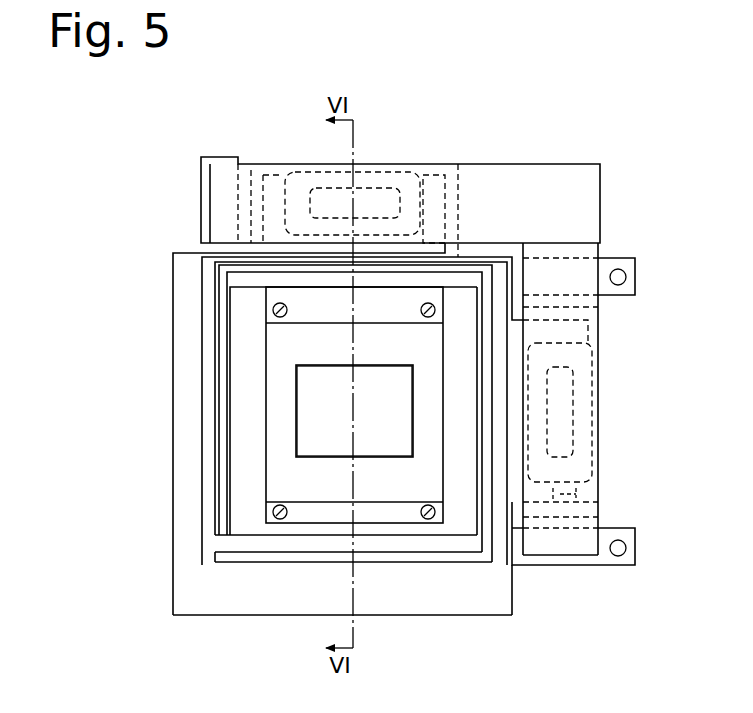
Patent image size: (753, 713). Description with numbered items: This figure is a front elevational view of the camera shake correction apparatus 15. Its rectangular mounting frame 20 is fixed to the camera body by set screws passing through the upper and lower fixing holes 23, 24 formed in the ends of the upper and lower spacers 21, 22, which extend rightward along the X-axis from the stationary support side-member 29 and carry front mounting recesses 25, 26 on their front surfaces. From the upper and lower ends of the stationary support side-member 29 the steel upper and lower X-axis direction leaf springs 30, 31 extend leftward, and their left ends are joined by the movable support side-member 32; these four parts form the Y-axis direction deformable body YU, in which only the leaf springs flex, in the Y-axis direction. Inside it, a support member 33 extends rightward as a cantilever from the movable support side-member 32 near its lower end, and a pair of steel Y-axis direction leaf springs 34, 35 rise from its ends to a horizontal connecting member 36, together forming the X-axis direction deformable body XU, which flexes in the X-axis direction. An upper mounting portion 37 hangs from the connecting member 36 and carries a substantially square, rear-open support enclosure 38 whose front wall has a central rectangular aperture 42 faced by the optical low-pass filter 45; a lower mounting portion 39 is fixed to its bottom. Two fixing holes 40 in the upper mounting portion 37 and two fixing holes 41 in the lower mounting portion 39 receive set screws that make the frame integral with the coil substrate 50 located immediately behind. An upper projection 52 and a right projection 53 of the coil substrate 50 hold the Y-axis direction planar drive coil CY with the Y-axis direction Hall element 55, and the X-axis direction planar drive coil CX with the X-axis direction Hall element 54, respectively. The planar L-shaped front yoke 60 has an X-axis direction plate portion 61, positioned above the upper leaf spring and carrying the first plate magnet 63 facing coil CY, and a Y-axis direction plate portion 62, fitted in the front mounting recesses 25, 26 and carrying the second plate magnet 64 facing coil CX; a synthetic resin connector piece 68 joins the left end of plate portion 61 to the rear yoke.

The camera shake correction apparatus 15 is at (146, 223).
The rectangular mounting frame 20 is at (190, 457).
The upper spacer 21 is at (636, 261).
The lower spacer 22 is at (636, 546).
The upper fixing hole 23 is at (612, 283).
The lower fixing hole 24 is at (612, 554).
The front mounting recess 25 is at (560, 265).
The front mounting recess 26 is at (547, 554).
The stationary support side-member 29 is at (498, 392).
The upper X-axis direction leaf spring 30 is at (420, 255).
The lower X-axis direction leaf spring 31 is at (407, 565).
The movable support side-member 32 is at (205, 433).
The support member 33 is at (381, 543).
The Y-axis direction leaf spring 34 is at (466, 509).
The Y-axis direction leaf spring 35 is at (228, 486).
The connecting member 36 is at (380, 283).
The upper mounting portion 37 is at (277, 297).
The support enclosure 38 is at (278, 403).
The lower mounting portion 39 is at (298, 508).
The fixing holes 40 is at (272, 312).
The fixing holes 41 is at (282, 520).
The rectangular aperture 42 is at (306, 365).
The optical low-pass filter 45 is at (309, 389).
The coil substrate 50 is at (492, 602).
The upper projection 52 is at (270, 178).
The right projection 53 is at (570, 488).
The X-axis direction Hall element 54 is at (565, 500).
The Y-axis direction Hall element 55 is at (453, 255).
The front yoke 60 is at (545, 203).
The X-axis direction plate portion 61 is at (500, 200).
The Y-axis direction plate portion 62 is at (598, 462).
The first plate magnet 63 is at (238, 182).
The second plate magnet 64 is at (600, 322).
The connector piece 68 is at (233, 175).
The X-axis direction planar drive coil CX is at (582, 358).
The Y-axis direction planar drive coil CY is at (292, 162).
The X-axis direction deformable body XU is at (219, 517).
The Y-axis direction deformable body YU is at (313, 244).